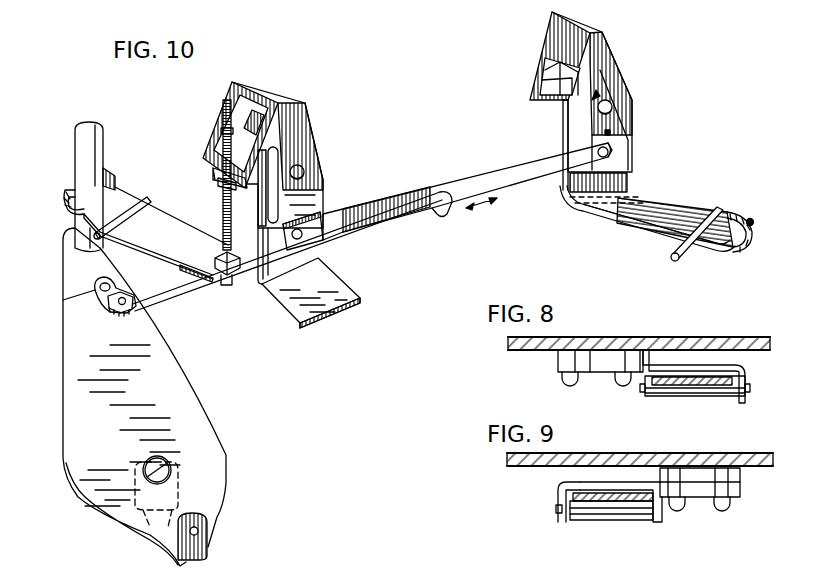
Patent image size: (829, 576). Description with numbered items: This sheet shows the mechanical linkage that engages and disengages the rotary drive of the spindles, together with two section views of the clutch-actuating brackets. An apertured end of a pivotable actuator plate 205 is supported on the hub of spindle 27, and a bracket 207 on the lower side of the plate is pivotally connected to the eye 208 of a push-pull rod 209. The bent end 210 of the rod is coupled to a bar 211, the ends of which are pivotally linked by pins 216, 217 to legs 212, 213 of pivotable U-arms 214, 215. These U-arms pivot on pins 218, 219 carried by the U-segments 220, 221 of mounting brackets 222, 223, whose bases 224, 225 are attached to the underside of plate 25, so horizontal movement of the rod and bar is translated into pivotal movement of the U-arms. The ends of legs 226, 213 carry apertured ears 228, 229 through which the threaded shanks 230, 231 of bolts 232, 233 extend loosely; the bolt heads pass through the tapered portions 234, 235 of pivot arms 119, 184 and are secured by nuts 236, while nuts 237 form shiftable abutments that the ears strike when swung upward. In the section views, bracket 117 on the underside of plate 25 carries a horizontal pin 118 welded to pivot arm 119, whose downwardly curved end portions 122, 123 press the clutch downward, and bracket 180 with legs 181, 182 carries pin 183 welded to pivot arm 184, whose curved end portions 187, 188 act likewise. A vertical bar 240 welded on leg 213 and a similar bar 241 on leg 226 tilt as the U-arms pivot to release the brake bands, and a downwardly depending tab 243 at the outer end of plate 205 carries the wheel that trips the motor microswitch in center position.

In FIG. 8, the plate 25 is at (737, 338).
In FIG. 9, the plate 25 is at (755, 455).
In FIG. 10, the spindle 27 is at (75, 135).
In FIG. 8, the bracket 117 is at (598, 378).
In FIG. 10, the horizontal pin 118 is at (95, 231).
In FIG. 8, the horizontal pin 118 is at (680, 403).
In FIG. 10, the pivot arm 119 is at (158, 220).
In FIG. 8, the pivot arm 119 is at (715, 403).
In FIG. 10, the downwardly curved end portion 122 is at (106, 172).
In FIG. 10, the downwardly curved end portion 123 is at (65, 192).
In FIG. 9, the bracket 180 is at (700, 507).
In FIG. 9, the leg 181 is at (562, 525).
In FIG. 9, the leg 182 is at (660, 524).
In FIG. 10, the horizontal pin 183 is at (671, 257).
In FIG. 9, the horizontal pin 183 is at (620, 522).
In FIG. 10, the pivot arm 184 is at (703, 205).
In FIG. 9, the pivot arm 184 is at (596, 503).
In FIG. 10, the downwardly curved end portion 187 is at (728, 253).
In FIG. 10, the downwardly curved end portion 188 is at (753, 221).
In FIG. 10, the actuator plate 205 is at (144, 397).
In FIG. 10, the bracket 207 is at (63, 302).
In FIG. 10, the eye 208 is at (160, 333).
In FIG. 10, the push-pull rod 209 is at (188, 292).
In FIG. 10, the bent end 210 is at (433, 183).
In FIG. 10, the bar 211 is at (468, 177).
In FIG. 10, the leg 212 is at (590, 101).
In FIG. 10, the leg 213 is at (305, 130).
In FIG. 10, the U-arm 214 is at (550, 13).
In FIG. 10, the U-arm 215 is at (288, 147).
In FIG. 10, the pin 216 is at (612, 151).
In FIG. 10, the pin 217 is at (300, 230).
In FIG. 10, the pin 218 is at (596, 96).
In FIG. 10, the pin 219 is at (302, 172).
In FIG. 10, the U-segment 220 is at (553, 100).
In FIG. 10, the U-segment 221 is at (230, 130).
In FIG. 10, the mounting bracket 222 is at (570, 183).
In FIG. 10, the mounting bracket 223 is at (322, 262).
In FIG. 10, the base 224 is at (590, 206).
In FIG. 10, the base 225 is at (330, 305).
In FIG. 10, the leg 226 is at (565, 37).
In FIG. 10, the apertured ear 228 is at (613, 86).
In FIG. 10, the apertured ear 229 is at (216, 174).
In FIG. 10, the threaded shank 230 is at (617, 57).
In FIG. 10, the threaded shank 231 is at (200, 175).
In FIG. 10, the bolt 232 is at (612, 135).
In FIG. 10, the bolt 233 is at (222, 208).
In FIG. 10, the tapered portion 234 is at (677, 200).
In FIG. 10, the tapered portion 235 is at (215, 265).
In FIG. 10, the nut 236 is at (238, 255).
In FIG. 10, the nut 237 is at (222, 186).
In FIG. 10, the vertical bar 240 is at (280, 200).
In FIG. 10, the vertical bar 241 is at (556, 62).
In FIG. 10, the tab 243 is at (207, 545).